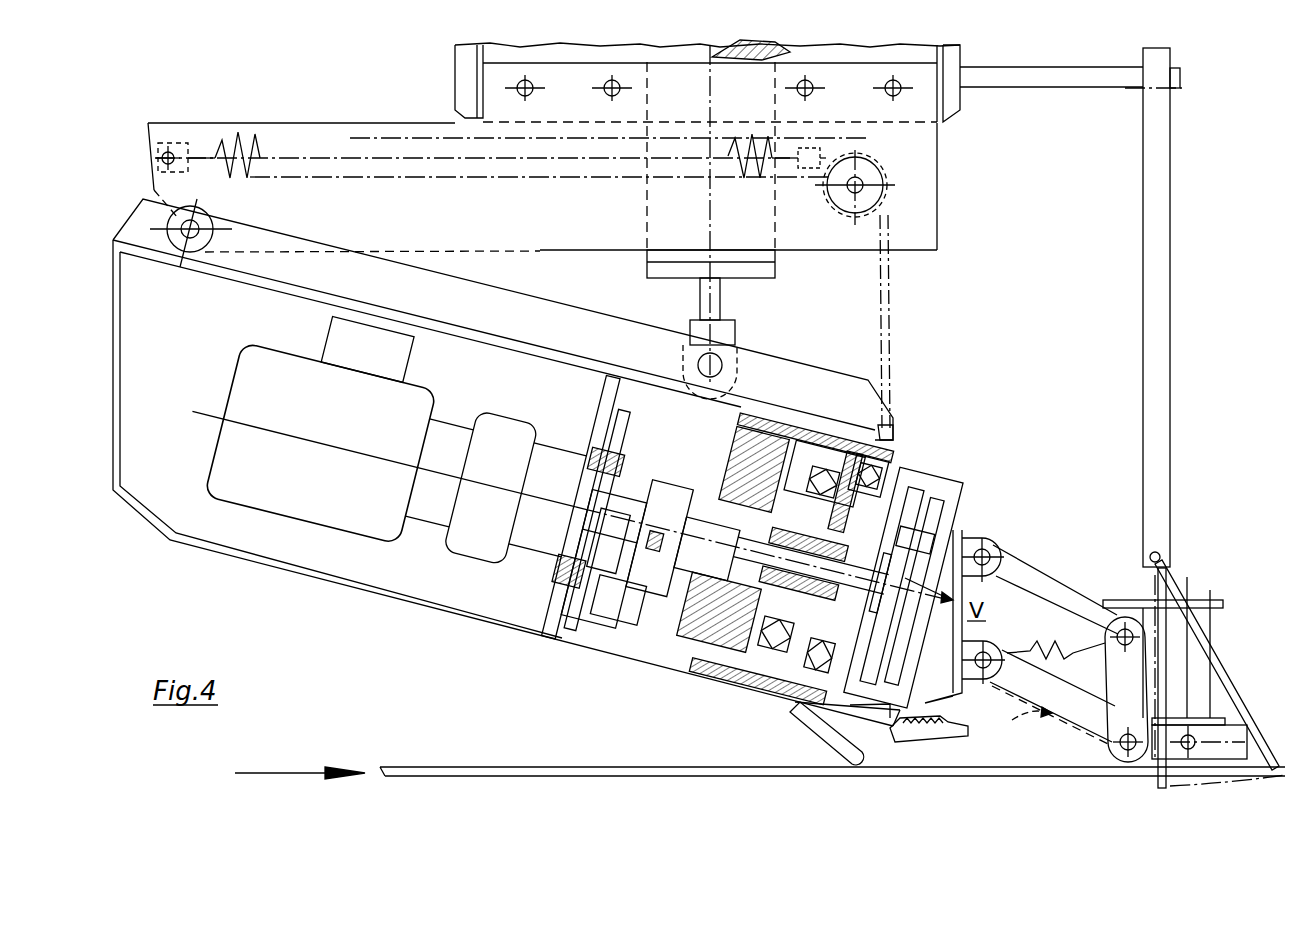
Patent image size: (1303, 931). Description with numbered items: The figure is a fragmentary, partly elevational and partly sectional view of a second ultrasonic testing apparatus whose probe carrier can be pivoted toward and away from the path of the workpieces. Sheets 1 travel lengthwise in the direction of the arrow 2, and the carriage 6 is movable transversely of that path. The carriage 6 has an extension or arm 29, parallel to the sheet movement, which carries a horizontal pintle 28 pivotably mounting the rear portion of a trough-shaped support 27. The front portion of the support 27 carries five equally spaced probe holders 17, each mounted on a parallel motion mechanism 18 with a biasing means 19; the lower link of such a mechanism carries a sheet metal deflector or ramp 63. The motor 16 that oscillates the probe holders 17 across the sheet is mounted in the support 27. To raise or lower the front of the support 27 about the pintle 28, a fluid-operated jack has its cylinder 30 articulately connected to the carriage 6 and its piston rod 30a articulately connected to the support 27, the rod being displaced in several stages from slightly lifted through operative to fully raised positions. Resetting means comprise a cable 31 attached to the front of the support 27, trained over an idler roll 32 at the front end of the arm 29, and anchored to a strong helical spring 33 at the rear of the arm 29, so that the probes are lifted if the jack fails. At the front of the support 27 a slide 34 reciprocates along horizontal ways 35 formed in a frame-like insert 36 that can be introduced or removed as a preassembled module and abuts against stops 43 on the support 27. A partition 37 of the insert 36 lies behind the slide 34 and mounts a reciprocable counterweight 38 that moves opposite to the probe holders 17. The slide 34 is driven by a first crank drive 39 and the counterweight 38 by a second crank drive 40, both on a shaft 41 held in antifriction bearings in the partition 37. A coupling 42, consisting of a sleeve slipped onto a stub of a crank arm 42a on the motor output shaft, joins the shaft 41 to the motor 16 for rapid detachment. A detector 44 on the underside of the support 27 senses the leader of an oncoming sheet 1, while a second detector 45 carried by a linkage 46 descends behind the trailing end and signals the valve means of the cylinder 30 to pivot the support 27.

The sheet 1 is at (885, 776).
The arrow 2 is at (275, 773).
The carriage 6 is at (954, 88).
The motor 16 is at (245, 398).
The probe holder 17 is at (1199, 583).
The parallel motion mechanism 18 is at (1016, 668).
The biasing means 19 is at (1062, 654).
The trough-shaped support 27 is at (218, 549).
The horizontal pintle 28 is at (212, 214).
The arm 29 is at (568, 236).
The cylinder 30 is at (704, 222).
The piston rod 30a is at (722, 313).
The cable 31 is at (892, 290).
The idler roll 32 is at (888, 200).
The helical spring 33 is at (390, 136).
The slide 34 is at (963, 500).
The horizontal ways 35 is at (798, 442).
The frame-like insert 36 is at (880, 462).
The partition 37 is at (855, 447).
The counterweight 38 is at (740, 470).
The first crank drive 39 is at (905, 612).
The second crank drive 40 is at (655, 637).
The shaft 41 is at (740, 527).
The coupling 42 is at (615, 632).
The crank arm 42a is at (572, 599).
The stops 43 is at (745, 424).
The detector 44 is at (832, 737).
The second detector 45 is at (1158, 783).
The linkage 46 is at (1148, 290).
The deflector 63 is at (1049, 716).